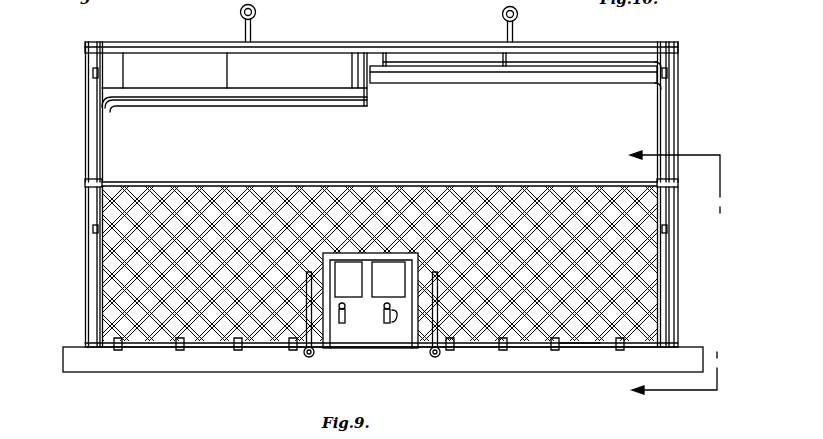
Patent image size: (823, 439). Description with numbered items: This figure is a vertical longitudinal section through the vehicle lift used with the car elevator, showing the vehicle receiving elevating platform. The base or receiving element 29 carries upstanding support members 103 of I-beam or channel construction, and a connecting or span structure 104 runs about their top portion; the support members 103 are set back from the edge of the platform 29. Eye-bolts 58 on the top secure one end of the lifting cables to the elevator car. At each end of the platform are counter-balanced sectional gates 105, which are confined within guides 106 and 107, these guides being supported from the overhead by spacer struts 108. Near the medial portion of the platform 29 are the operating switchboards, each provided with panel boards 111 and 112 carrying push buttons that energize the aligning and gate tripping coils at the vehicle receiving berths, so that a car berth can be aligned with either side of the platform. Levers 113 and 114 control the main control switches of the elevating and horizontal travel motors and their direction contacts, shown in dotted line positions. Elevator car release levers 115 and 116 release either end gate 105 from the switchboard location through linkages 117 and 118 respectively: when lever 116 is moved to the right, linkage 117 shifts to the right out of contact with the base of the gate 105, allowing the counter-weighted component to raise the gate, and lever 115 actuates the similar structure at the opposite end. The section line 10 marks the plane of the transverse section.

The section line 10- 10 is at (651, 278).
The base or receiving element 29 is at (668, 362).
The eye-bolts 58 is at (257, 13).
The upstanding support members 103 is at (88, 86).
The connecting or span structure 104 is at (386, 22).
The counter-balanced sectional gates 105 is at (97, 192).
The guide 106 is at (187, 96).
The guide 107 is at (497, 70).
The spacer struts 108 is at (128, 68).
The panel board 111 is at (352, 298).
The panel board 112 is at (385, 272).
The lever 113 is at (350, 282).
The lever 114 is at (396, 323).
The elevator car release lever 115 is at (433, 272).
The elevator car release lever 116 is at (303, 285).
The linkage 117 is at (213, 340).
The linkage 118 is at (576, 352).